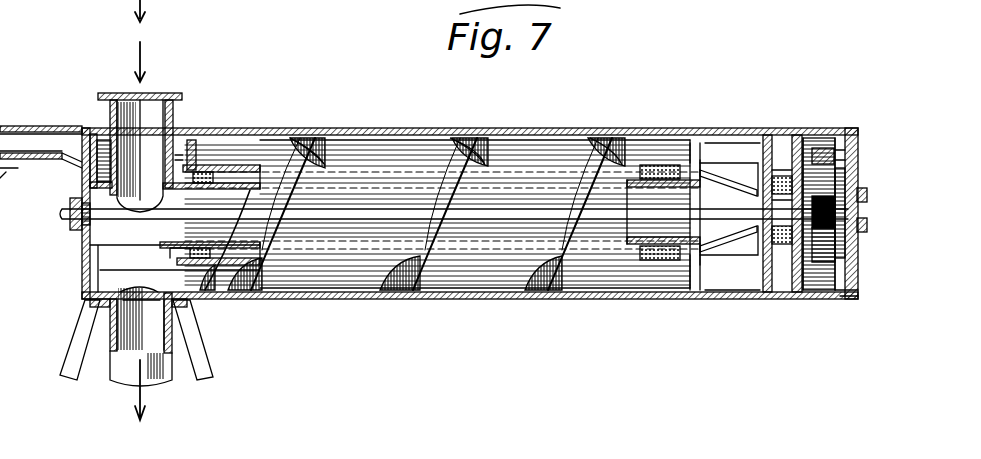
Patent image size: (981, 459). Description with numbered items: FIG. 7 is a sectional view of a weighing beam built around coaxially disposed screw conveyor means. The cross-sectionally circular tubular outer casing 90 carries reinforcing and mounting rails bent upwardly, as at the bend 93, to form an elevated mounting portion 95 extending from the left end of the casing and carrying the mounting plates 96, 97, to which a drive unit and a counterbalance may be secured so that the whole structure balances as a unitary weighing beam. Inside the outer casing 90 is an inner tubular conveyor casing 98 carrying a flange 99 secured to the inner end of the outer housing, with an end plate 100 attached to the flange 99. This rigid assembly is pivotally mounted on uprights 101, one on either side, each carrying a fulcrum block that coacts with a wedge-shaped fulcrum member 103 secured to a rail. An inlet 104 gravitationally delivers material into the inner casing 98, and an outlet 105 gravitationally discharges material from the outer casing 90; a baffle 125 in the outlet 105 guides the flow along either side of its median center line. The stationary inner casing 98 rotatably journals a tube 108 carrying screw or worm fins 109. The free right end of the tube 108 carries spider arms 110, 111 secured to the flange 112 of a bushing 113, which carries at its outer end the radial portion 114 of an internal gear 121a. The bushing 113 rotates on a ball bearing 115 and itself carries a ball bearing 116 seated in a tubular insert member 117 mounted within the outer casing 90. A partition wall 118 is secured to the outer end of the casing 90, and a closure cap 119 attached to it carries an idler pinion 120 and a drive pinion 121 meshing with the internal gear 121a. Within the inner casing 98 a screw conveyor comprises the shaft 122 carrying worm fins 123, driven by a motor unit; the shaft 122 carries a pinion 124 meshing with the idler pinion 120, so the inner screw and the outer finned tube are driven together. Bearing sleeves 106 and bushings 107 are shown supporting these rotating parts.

The tubular outer casing 90 is at (545, 132).
The upwardly bent portion 93 is at (90, 140).
The elevated mounting portion 95 is at (20, 140).
The mounting plate 96 is at (3, 138).
The mounting plate 97 is at (16, 184).
The inner tubular conveyor casing 98 is at (82, 270).
The flange 99 is at (82, 293).
The end plate 100 is at (82, 244).
The upright 101 is at (73, 357).
The wedge-shaped fulcrum member 103 is at (91, 41).
The inlet 104 is at (172, 117).
The outlet 105 is at (173, 345).
The bearing sleeve 106 is at (233, 165).
The bushing 107 is at (672, 180).
The tube 108 is at (193, 165).
The screw or worm fins 109 is at (323, 153).
The spider arm 110 is at (728, 178).
The spider arm 111 is at (730, 282).
The flange 112 is at (767, 130).
The bushing 113 is at (808, 140).
The radial portion 114 is at (858, 145).
The ball bearing 115 is at (858, 176).
The ball bearing 116 is at (780, 250).
The tubular insert member 117 is at (770, 260).
The partition wall 118 is at (795, 133).
The closure cap 119 is at (850, 130).
The idler pinion 120 is at (858, 224).
The drive pinion 121 is at (833, 297).
The internal gear 121a is at (858, 152).
The shaft 122 is at (80, 229).
The worm fins 123 is at (233, 152).
The pinion 124 is at (857, 202).
The baffle 125 is at (157, 310).